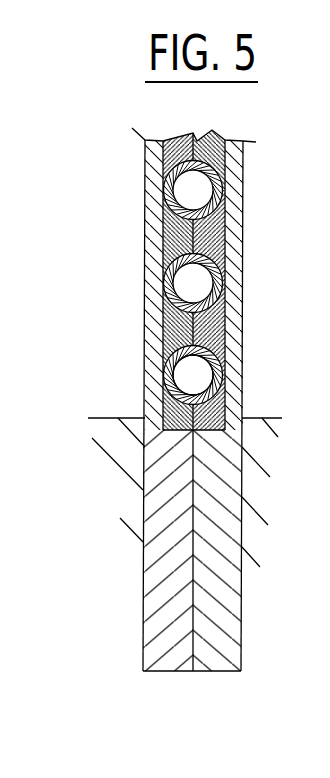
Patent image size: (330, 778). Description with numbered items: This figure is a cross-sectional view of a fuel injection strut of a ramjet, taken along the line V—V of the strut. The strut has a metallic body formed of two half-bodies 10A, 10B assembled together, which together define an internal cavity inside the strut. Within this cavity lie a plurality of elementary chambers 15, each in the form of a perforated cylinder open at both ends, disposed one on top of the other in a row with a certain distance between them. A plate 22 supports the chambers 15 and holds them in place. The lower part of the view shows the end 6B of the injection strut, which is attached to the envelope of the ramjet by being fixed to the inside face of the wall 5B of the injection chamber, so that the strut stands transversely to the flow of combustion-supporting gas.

The plate 22 is at (168, 223).
The half-body 10B is at (145, 300).
The half-body 10A is at (243, 305).
The elementary chamber 15 is at (202, 375).
The wall of the injection chamber 5B is at (103, 428).
The end of the injection strut 6B is at (152, 579).